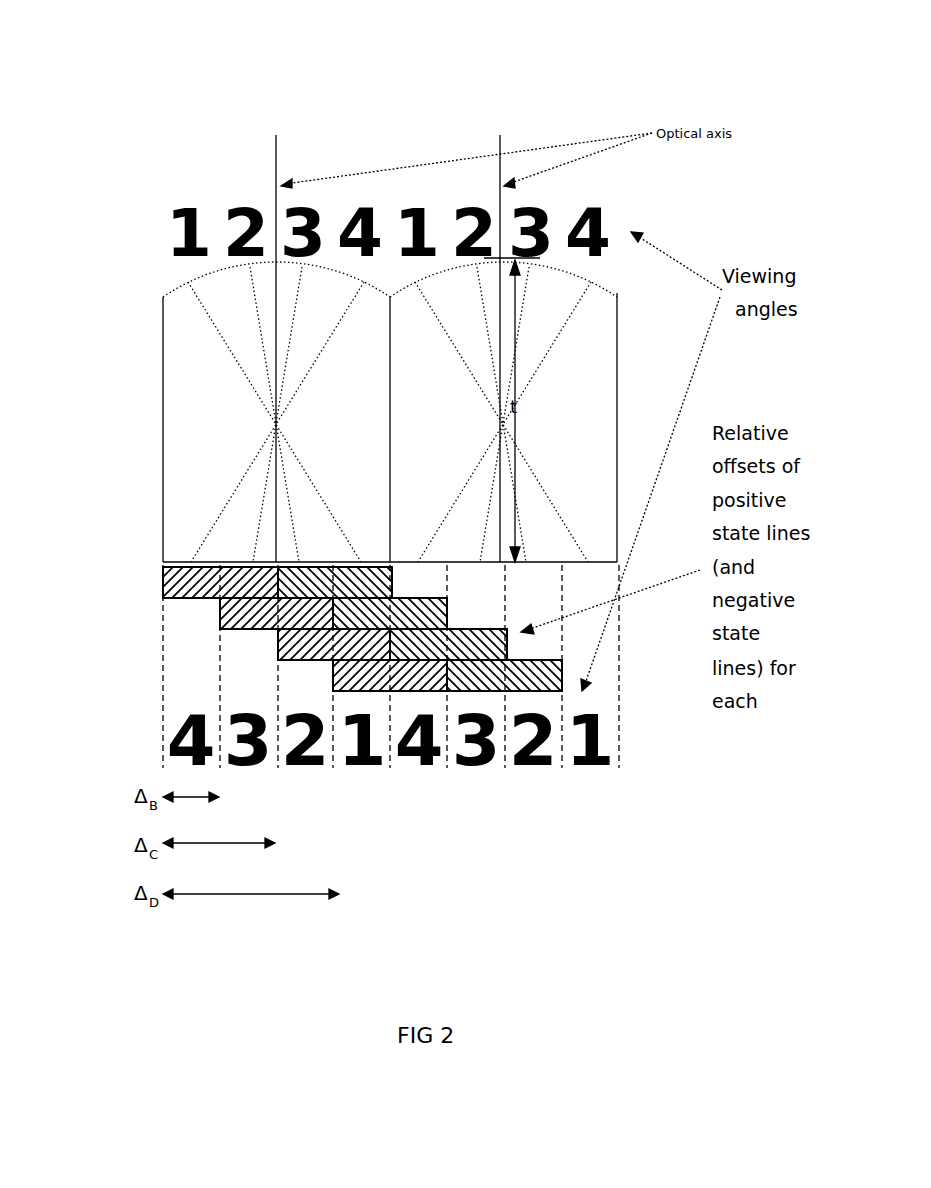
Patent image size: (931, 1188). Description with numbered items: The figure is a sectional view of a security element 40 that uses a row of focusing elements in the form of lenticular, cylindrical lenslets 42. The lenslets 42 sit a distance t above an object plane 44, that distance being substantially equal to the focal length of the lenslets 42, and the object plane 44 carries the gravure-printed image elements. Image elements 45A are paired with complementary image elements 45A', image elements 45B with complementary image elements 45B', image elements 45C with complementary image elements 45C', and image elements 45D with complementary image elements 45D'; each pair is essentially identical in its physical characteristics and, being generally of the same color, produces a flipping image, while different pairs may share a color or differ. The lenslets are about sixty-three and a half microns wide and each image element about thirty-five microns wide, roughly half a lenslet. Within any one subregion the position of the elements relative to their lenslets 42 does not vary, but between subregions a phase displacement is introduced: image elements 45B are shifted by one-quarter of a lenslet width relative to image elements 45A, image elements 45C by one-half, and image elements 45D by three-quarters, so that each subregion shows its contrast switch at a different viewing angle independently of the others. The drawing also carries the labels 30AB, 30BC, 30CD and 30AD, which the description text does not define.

The security element 40 is at (155, 124).
The lenticular lenslets 42 is at (175, 292).
The object plane 44 is at (620, 590).
The view boundary line between views A and B 30AB is at (228, 343).
The view boundary line between views B and C 30BC is at (335, 330).
The view boundary line between views C and D 30CD is at (300, 313).
The view boundary line between views A and D 30AD is at (258, 350).
The image elements 45A is at (208, 540).
The complementary image elements 45A' is at (206, 568).
The image elements 45B is at (351, 543).
The complementary image elements 45B' is at (238, 620).
The image elements 45C is at (534, 688).
The complementary image elements 45C' is at (269, 657).
The image elements 45D is at (518, 762).
The complementary image elements 45D' is at (286, 690).